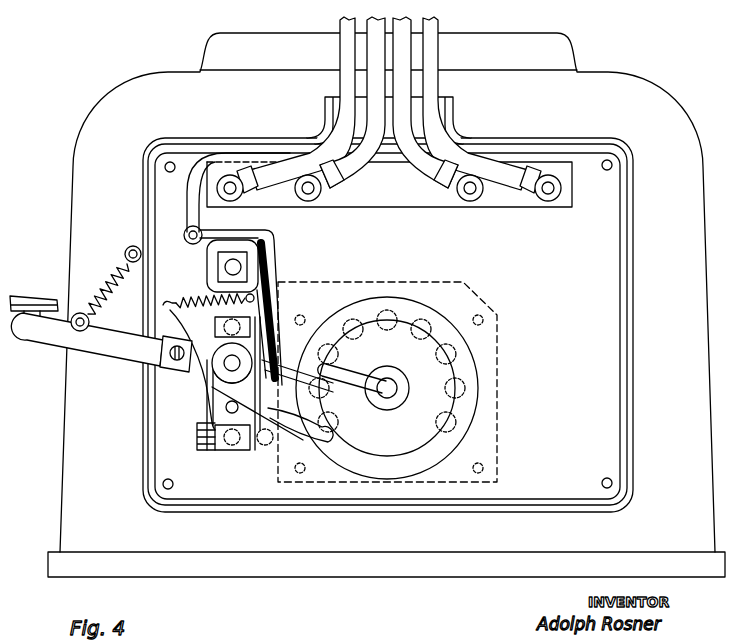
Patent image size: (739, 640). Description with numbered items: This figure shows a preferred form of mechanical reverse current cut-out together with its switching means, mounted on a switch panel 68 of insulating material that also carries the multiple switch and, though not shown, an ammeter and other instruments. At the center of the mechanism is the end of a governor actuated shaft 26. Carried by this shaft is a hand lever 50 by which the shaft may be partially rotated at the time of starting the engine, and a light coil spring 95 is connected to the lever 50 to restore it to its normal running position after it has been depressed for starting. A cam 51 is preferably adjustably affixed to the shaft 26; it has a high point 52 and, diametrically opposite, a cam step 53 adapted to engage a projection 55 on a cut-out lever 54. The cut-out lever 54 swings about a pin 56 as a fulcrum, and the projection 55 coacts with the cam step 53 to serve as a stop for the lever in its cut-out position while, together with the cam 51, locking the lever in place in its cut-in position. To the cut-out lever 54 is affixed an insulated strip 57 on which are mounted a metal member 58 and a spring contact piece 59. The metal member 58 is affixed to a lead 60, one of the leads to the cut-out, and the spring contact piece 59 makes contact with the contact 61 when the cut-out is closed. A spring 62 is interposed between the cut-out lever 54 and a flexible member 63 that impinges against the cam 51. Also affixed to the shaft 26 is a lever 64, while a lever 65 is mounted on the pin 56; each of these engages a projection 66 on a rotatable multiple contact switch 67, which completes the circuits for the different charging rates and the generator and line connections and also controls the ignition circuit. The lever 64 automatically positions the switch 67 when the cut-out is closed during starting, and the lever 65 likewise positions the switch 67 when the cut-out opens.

The governor actuated shaft 26 is at (218, 387).
The lever 50 is at (98, 333).
The cam 51 is at (225, 408).
The high point 52 is at (222, 368).
The cam step 53 is at (257, 428).
The cut-out lever 54 is at (273, 307).
The projection 55 is at (277, 342).
The pin 56 is at (213, 430).
The insulated strip 57 is at (273, 280).
The metal member 58 is at (270, 231).
The spring contact piece 59 is at (210, 255).
The lead 60 is at (193, 203).
The contact 61 is at (232, 266).
The spring 62 is at (195, 303).
The flexible member 63 is at (181, 322).
The lever 64 is at (298, 434).
The lever 65 is at (330, 392).
The projection 66 is at (350, 372).
The multiple contact switch 67 is at (401, 388).
The switch panel 68 is at (388, 325).
The coil spring 95 is at (97, 269).